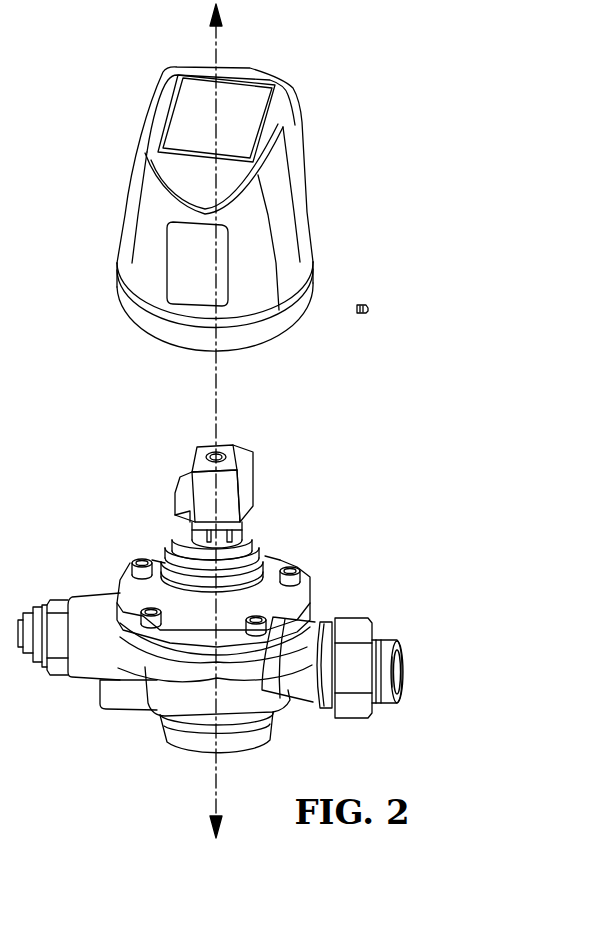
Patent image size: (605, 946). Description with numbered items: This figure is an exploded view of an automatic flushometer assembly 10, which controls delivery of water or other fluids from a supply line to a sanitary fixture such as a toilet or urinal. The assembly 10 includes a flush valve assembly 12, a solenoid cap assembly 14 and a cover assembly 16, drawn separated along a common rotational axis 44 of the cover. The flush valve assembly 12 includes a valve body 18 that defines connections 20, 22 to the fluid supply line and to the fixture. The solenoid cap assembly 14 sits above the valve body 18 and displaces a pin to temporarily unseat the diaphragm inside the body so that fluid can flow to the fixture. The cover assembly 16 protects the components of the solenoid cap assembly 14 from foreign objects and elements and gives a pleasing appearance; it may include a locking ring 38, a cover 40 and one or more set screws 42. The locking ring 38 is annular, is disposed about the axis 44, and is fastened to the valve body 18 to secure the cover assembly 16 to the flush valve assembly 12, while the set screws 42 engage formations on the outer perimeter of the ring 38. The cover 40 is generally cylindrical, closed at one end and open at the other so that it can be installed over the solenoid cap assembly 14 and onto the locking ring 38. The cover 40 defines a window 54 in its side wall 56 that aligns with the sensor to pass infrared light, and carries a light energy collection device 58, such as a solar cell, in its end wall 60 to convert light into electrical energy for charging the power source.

The automatic flushometer assembly 10 is at (112, 393).
The flush valve assembly 12 is at (150, 722).
The solenoid cap assembly 14 is at (257, 502).
The cover assembly 16 is at (126, 156).
The valve body 18 is at (185, 702).
The connection 20 is at (393, 640).
The connection 22 is at (242, 738).
The locking ring 38 is at (310, 583).
The cover 40 is at (311, 230).
The set screw 42 is at (369, 308).
The rotational axis 44 is at (216, 385).
The window 54 is at (167, 277).
The side wall 56 is at (150, 215).
The light energy collection device 58 is at (240, 110).
The end wall 60 is at (270, 127).